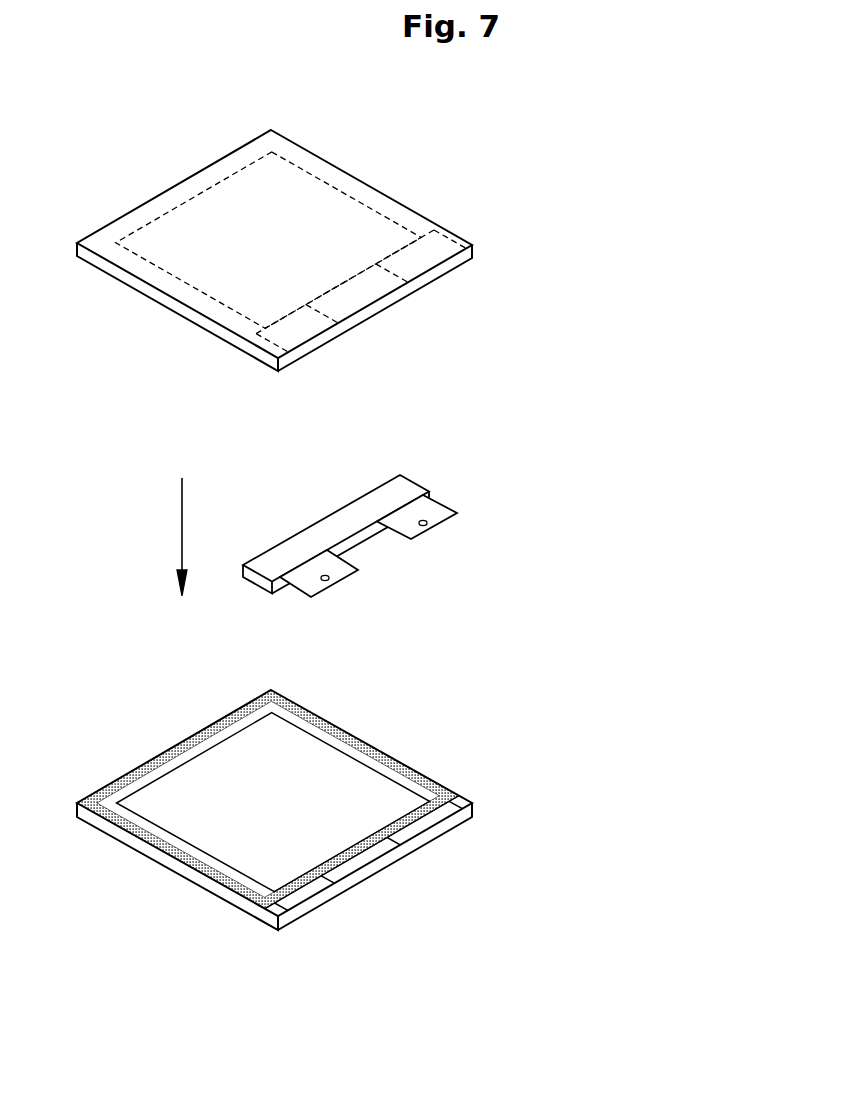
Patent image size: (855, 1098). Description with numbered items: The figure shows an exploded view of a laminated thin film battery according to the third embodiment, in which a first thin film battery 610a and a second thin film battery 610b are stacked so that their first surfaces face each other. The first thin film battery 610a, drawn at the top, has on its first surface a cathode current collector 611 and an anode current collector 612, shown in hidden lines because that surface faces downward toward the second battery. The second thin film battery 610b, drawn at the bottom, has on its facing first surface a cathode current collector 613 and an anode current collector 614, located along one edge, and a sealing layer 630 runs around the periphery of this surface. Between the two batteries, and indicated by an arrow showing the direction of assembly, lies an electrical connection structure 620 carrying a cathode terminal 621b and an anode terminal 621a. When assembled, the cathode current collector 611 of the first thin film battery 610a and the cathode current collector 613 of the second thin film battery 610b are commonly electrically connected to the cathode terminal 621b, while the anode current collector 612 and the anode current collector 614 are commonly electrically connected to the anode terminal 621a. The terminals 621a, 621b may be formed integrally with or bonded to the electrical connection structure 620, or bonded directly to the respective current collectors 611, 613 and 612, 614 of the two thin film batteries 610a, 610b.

The first thin film battery 610a is at (370, 195).
The cathode current collector 611 is at (423, 252).
The anode current collector 612 is at (302, 327).
The electrical connection structure 620 is at (350, 530).
The anode terminal 621a is at (313, 586).
The cathode terminal 621b is at (435, 513).
The sealing layer 630 is at (130, 828).
The second thin film battery 610b is at (182, 868).
The cathode current collector 613 is at (310, 885).
The anode current collector 614 is at (423, 820).